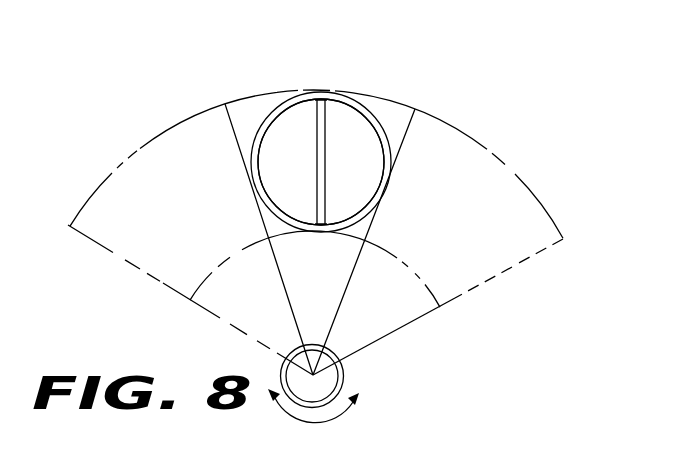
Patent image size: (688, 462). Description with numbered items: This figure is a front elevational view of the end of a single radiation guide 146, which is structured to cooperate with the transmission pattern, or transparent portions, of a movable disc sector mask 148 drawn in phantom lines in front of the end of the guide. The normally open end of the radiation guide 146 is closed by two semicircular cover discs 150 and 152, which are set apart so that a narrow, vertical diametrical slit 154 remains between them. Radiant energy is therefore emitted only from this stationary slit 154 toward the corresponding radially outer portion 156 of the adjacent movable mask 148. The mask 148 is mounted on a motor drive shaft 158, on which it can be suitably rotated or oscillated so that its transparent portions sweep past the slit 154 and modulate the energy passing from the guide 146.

The radiation guide 146 is at (383, 130).
The movable disc sector mask 148 is at (514, 173).
The semicircular cover disc 150 is at (295, 110).
The semicircular cover disc 152 is at (342, 118).
The diametrical slit 154 is at (317, 158).
The radially outer portion of mask 156 is at (502, 248).
The motor drive shaft 158 is at (344, 378).